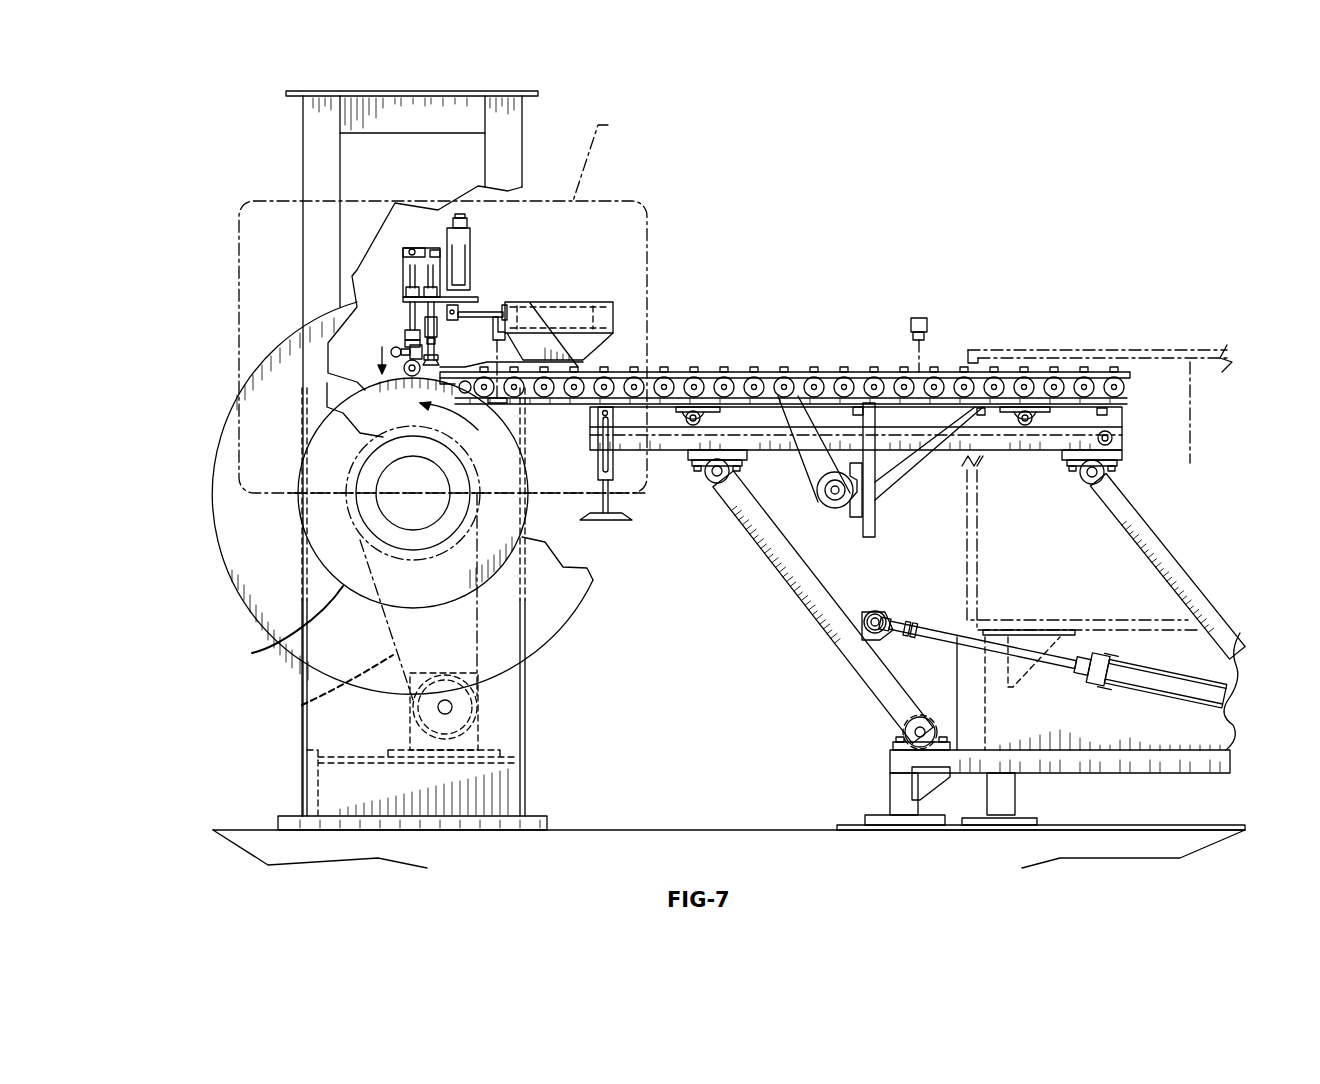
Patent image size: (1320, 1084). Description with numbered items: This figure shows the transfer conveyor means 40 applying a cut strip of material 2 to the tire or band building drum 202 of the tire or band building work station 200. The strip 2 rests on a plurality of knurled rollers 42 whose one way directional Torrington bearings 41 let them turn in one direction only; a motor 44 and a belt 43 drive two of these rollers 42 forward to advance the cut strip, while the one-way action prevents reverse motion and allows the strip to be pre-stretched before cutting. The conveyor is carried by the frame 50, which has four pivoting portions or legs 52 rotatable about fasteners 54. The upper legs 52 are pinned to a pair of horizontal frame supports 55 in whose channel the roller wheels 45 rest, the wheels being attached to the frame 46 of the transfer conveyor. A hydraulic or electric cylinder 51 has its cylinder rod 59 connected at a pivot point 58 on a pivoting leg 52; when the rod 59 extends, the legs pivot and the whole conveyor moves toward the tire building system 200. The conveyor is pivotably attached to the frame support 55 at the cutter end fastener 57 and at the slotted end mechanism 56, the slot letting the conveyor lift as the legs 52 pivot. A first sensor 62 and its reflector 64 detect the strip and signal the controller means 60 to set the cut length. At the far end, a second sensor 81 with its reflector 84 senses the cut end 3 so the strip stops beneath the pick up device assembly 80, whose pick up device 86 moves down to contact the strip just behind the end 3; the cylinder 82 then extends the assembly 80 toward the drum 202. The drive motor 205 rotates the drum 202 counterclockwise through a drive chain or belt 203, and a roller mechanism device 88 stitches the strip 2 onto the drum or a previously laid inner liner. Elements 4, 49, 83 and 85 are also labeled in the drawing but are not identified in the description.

The strip material 2 is at (363, 388).
The cut end 3 is at (353, 394).
The roller bed 4 is at (1137, 376).
The transfer conveyor means 40 is at (778, 370).
The one way directional Torrington bearings 41 is at (998, 341).
The knurled rollers 42 is at (972, 386).
The belt 43 is at (806, 453).
The motor 44 is at (837, 507).
The roller wheels 45 is at (688, 420).
The frame 46 is at (744, 393).
The guide rail 49 is at (888, 370).
The frame 50 is at (887, 779).
The hydraulic or electric cylinder 51 is at (1193, 688).
The pivoting portions or legs 52 is at (803, 600).
The fasteners 54 is at (715, 476).
The horizontal frame supports 55 is at (1003, 450).
The slotted end mechanism 56 is at (598, 458).
The cutter end fastener 57 is at (1112, 438).
The pivot point 58 is at (882, 619).
The cylinder rod 59 is at (938, 640).
The controller means 60 is at (1172, 350).
The first sensor 62 is at (926, 330).
The reflector 64 is at (925, 408).
The pick up device assembly 80 is at (421, 233).
The second sensor 81 is at (496, 330).
The cylinder 82 is at (577, 308).
The plate 83 is at (543, 345).
The reflector 84 is at (500, 402).
The cylinder 85 is at (462, 262).
The pick up device 86 is at (436, 336).
The roller mechanism device 88 is at (404, 336).
The tire or band building work station 200 is at (212, 477).
The tire or band building drum 202 is at (268, 652).
The drive chain or belt 203 is at (300, 710).
The drive motor 205 is at (473, 725).